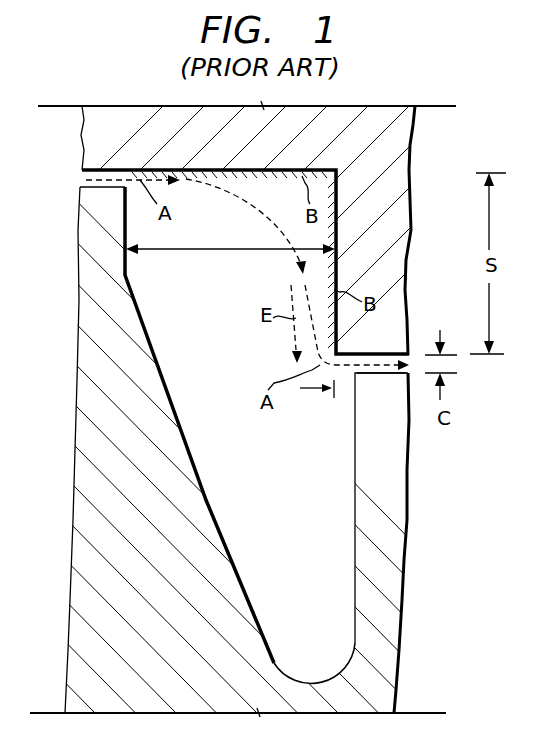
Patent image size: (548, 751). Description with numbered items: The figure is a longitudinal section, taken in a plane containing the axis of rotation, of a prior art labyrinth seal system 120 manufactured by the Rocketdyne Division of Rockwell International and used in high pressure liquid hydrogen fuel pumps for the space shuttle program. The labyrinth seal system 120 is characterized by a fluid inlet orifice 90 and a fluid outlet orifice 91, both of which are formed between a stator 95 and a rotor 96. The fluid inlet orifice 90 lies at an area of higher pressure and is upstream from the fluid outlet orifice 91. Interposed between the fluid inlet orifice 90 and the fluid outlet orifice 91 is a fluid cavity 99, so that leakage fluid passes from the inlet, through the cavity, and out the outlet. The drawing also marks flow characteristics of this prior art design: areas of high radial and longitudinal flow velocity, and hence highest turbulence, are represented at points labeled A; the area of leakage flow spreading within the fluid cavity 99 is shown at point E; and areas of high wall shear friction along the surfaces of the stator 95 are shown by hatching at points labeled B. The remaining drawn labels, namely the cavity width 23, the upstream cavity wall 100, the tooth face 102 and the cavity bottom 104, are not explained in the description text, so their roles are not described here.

The cavity width 23 is at (258, 200).
The fluid inlet orifice 90 is at (86, 178).
The fluid outlet orifice 91 is at (386, 378).
The stator 95 is at (414, 140).
The rotor 96 is at (388, 618).
The fluid cavity 99 is at (238, 369).
The upstream cavity wall 100 is at (176, 250).
The tooth upstream face 102 is at (346, 392).
The cavity bottom 104 is at (311, 670).
The labyrinth seal system 120 is at (437, 487).